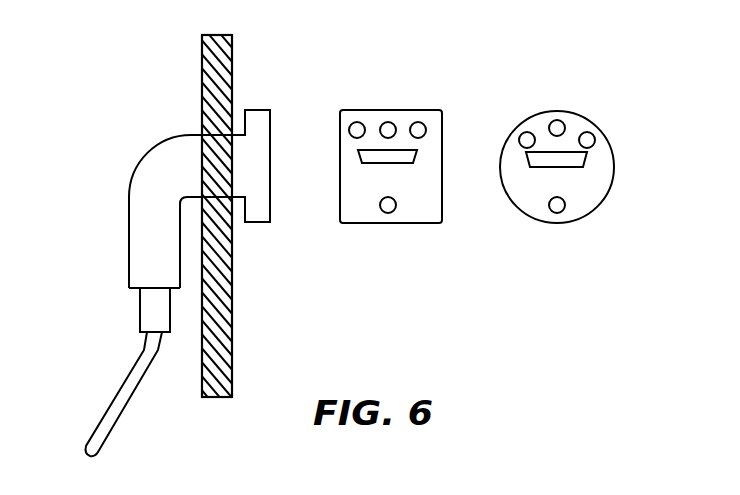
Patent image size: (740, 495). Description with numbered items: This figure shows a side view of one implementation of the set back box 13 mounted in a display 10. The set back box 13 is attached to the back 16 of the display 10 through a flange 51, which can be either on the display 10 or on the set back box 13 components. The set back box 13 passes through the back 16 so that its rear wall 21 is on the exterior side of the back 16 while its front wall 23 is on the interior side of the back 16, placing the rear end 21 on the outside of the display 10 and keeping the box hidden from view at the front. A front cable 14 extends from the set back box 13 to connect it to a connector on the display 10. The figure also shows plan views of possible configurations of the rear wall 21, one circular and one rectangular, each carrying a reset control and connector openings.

The display 10 is at (253, 233).
The set back box 13 is at (146, 160).
The front cable 14 is at (112, 398).
The back 16 is at (232, 52).
The rear wall 21 is at (515, 125).
The front wall 23 is at (129, 256).
The flange 51 is at (212, 130).